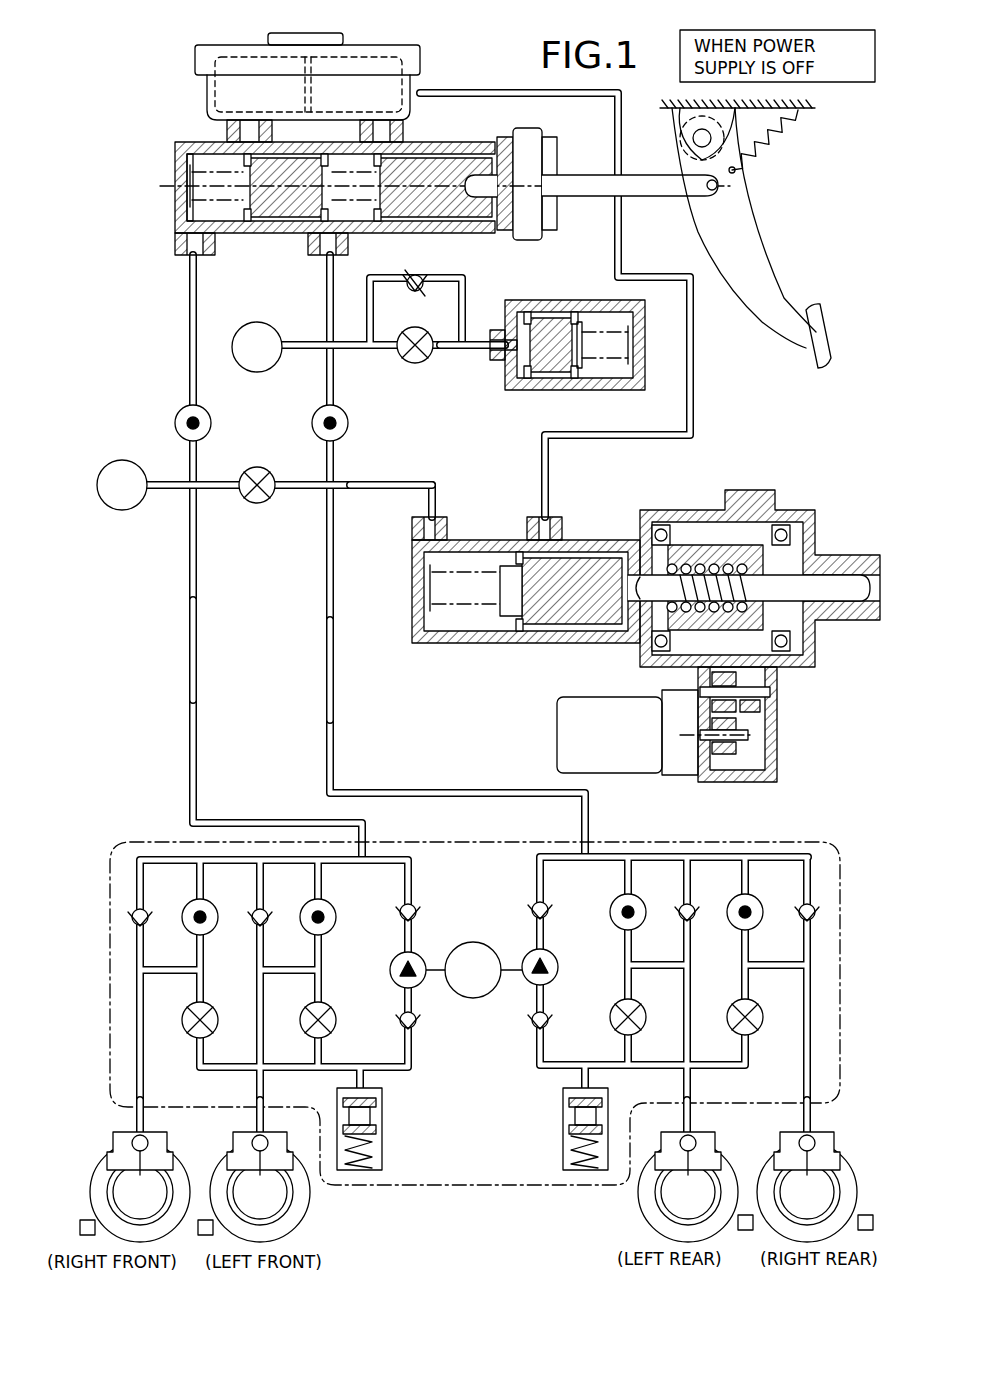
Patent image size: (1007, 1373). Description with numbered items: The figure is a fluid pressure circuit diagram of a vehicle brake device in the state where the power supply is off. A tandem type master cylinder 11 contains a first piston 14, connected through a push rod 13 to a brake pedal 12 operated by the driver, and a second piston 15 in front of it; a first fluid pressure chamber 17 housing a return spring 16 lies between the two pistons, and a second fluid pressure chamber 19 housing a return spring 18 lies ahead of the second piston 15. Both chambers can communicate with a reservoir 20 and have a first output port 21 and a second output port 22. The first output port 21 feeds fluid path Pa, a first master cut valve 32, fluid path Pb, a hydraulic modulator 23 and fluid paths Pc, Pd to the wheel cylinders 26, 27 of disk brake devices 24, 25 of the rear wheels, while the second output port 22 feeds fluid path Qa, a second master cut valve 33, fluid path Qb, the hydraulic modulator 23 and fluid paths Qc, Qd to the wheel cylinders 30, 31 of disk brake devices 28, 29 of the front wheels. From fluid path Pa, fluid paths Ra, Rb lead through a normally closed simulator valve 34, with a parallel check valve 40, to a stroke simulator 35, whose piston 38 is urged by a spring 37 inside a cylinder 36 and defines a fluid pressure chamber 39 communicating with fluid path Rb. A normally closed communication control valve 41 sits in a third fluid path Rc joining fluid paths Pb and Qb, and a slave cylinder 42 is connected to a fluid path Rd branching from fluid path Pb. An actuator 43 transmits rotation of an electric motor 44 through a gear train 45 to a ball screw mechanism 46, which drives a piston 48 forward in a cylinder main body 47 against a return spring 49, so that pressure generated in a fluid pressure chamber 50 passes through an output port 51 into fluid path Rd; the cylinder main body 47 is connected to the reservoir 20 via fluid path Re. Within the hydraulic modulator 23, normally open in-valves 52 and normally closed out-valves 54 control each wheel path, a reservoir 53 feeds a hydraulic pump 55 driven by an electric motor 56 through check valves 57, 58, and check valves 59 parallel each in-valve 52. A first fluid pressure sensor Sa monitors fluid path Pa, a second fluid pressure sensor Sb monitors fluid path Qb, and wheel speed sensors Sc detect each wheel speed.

The tandem type master cylinder 11 is at (413, 165).
The brake pedal 12 is at (750, 265).
The push rod 13 is at (590, 200).
The first piston 14 is at (440, 215).
The second piston 15 is at (285, 212).
The return spring 16 is at (378, 200).
The first fluid pressure chamber 17 is at (357, 163).
The return spring 18 is at (182, 212).
The second fluid pressure chamber 19 is at (200, 158).
The reservoir 20 is at (400, 95).
The first output port 21 is at (323, 255).
The second output port 22 is at (187, 255).
The hydraulic modulator 23 is at (115, 842).
The disk brake device 24 is at (638, 1218).
The disk brake device 25 is at (848, 1148).
The wheel cylinder 26 is at (688, 1187).
The wheel cylinder 27 is at (807, 1187).
The disk brake device 28 is at (312, 1215).
The disk brake device 29 is at (95, 1145).
The wheel cylinder 30 is at (260, 1187).
The wheel cylinder 31 is at (140, 1187).
The first master cut valve 32 is at (350, 428).
The second master cut valve 33 is at (182, 412).
The simulator valve 34 is at (420, 336).
The stroke simulator 35 is at (532, 393).
The cylinder 36 is at (574, 362).
The spring 37 is at (633, 352).
The piston 38 is at (553, 318).
The fluid pressure chamber 39 is at (527, 322).
The check valve 40 is at (421, 280).
The communication control valve 41 is at (260, 503).
The slave cylinder 42 is at (617, 596).
The actuator 43 is at (754, 556).
The electric motor 44 is at (626, 750).
The gear train 45 is at (755, 722).
The ball screw mechanism 46 is at (700, 537).
The cylinder main body 47 is at (530, 645).
The piston 48 is at (585, 556).
The return spring 49 is at (424, 622).
The fluid pressure chamber 50 is at (460, 628).
The output port 51 is at (440, 520).
The in-valve 52 is at (185, 910).
The reservoir 53 is at (384, 1117).
The out-valve 54 is at (188, 1030).
The hydraulic pump 55 is at (420, 958).
The electric motor 56 is at (473, 998).
The check valve 57 is at (414, 1028).
The check valve 58 is at (414, 906).
The check valve 59 is at (132, 910).
The fluid path Pa is at (326, 298).
The fluid path Pb is at (326, 672).
The fluid path Pc is at (690, 1115).
The fluid path Pd is at (810, 1116).
The fluid path Qa is at (190, 328).
The fluid path Qb is at (190, 650).
The fluid path Qc is at (257, 1118).
The fluid path Qd is at (137, 1118).
The fluid path Ra is at (357, 352).
The fluid path Rb is at (455, 352).
The third fluid path Rc is at (215, 492).
The fluid path Rd is at (372, 492).
The fluid path Re is at (694, 360).
The first fluid pressure sensor Sa is at (265, 372).
The second fluid pressure sensor Sb is at (115, 510).
The wheel speed sensor Sc is at (80, 1222).